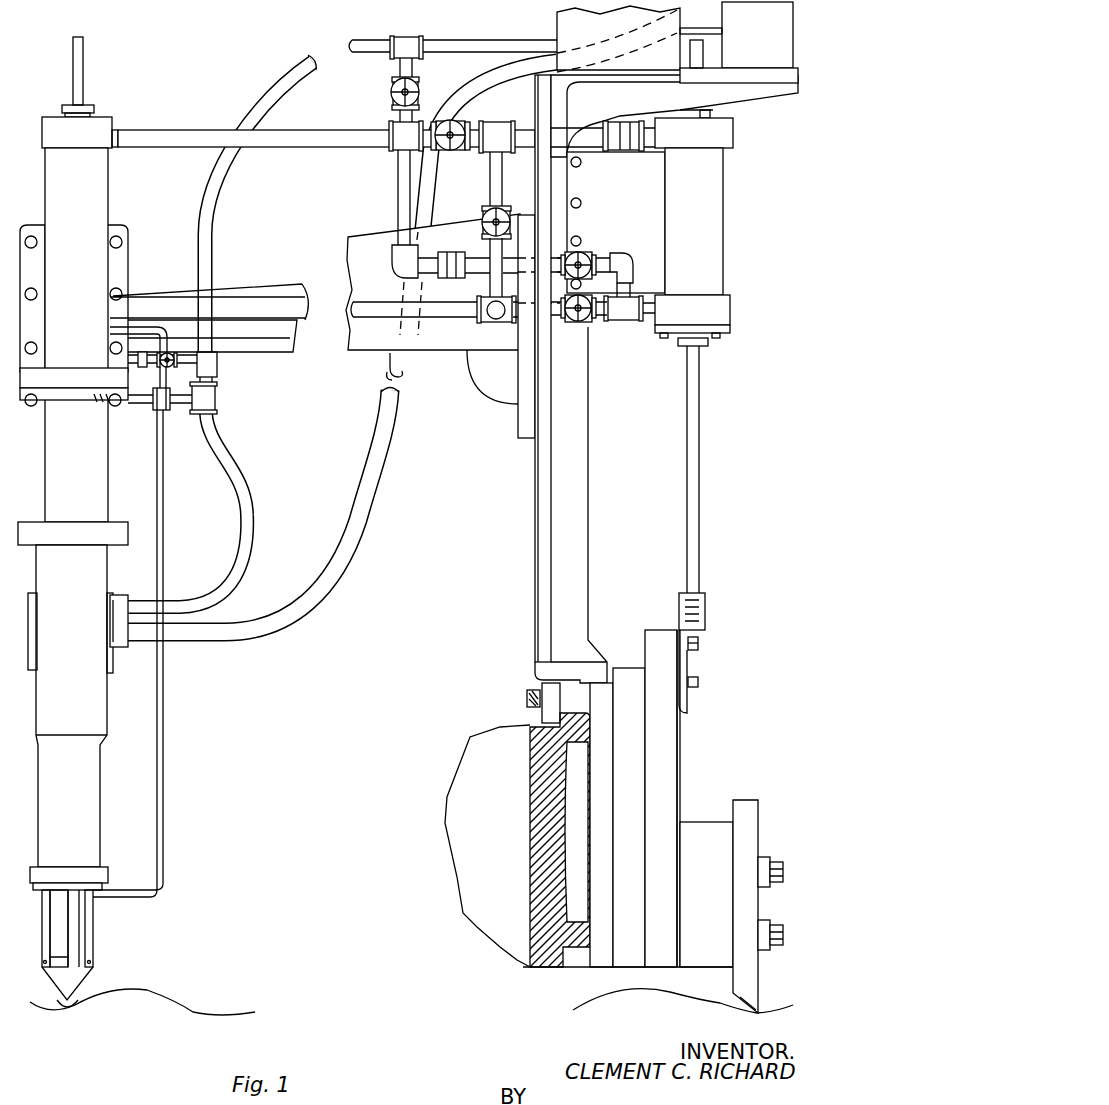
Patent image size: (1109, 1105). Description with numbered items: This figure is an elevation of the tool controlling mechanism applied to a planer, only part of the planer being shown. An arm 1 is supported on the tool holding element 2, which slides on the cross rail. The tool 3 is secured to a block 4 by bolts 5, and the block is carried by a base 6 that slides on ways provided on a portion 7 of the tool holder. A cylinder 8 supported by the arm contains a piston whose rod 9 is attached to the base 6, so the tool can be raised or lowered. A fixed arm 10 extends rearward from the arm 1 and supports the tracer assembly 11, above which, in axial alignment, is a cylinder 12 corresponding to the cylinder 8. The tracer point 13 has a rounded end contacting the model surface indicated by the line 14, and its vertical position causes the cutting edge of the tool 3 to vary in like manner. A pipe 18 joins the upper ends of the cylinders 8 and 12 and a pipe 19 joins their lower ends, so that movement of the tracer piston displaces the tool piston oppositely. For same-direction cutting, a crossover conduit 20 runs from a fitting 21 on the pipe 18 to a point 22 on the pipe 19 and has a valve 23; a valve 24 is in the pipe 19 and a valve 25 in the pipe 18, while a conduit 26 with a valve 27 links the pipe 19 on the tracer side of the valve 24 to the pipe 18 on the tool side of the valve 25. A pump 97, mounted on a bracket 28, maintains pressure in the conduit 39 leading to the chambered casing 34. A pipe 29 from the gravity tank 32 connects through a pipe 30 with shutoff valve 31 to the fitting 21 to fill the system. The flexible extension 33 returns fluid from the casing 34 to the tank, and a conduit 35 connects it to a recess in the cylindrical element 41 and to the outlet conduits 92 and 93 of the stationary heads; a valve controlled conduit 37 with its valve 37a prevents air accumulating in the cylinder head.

The arm 1 is at (582, 537).
The tool holding element 2 is at (603, 843).
The tool 3 is at (760, 973).
The block 4 is at (713, 825).
The bolts 5 is at (792, 902).
The base 6 is at (673, 748).
The portion of the tool holder 7 is at (628, 777).
The cylinder 8 is at (713, 257).
The rod 9 is at (700, 463).
The fixed arm 10 is at (450, 352).
The tracer or feeler assembly 11 is at (105, 813).
The cylinder 12 is at (97, 201).
The tracer tool or point 13 is at (77, 997).
The model or pattern 14 is at (152, 997).
The pipe 18 is at (306, 140).
The pipe 19 is at (263, 307).
The conduit 20 is at (398, 193).
The fitting 21 is at (397, 130).
The point 22 is at (630, 318).
The valve 23 is at (588, 257).
The valve 24 is at (580, 323).
The valve 25 is at (485, 111).
The conduit 26 is at (492, 185).
The valve 27 is at (486, 228).
The bracket 28 is at (674, 116).
The pipe 29 is at (480, 43).
The pipe 30 is at (417, 72).
The shutoff valve 31 is at (392, 92).
The gravity tank 32 is at (550, 127).
The flexible extension 33 is at (213, 240).
The chambered casing 34 is at (115, 598).
The conduit 35 is at (147, 398).
The valve controlled conduit 37 is at (127, 353).
The valve 37a is at (180, 372).
The conduit 39 is at (250, 630).
The cylindrical element 41 is at (57, 907).
The outlet conduit 92 is at (165, 856).
The outlet conduit 93 is at (155, 328).
The pump 97 is at (739, 42).